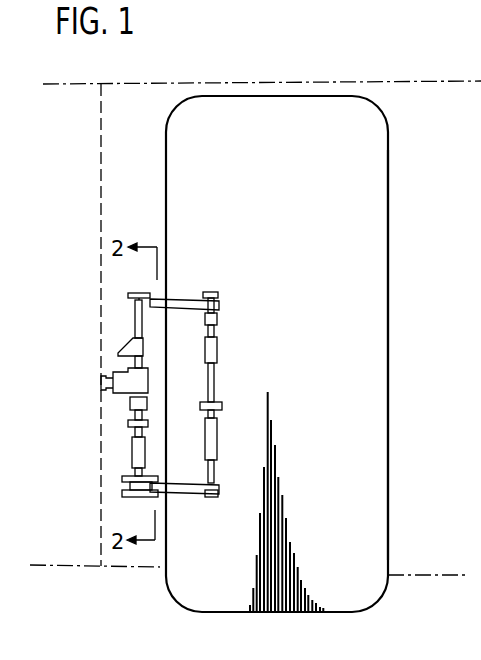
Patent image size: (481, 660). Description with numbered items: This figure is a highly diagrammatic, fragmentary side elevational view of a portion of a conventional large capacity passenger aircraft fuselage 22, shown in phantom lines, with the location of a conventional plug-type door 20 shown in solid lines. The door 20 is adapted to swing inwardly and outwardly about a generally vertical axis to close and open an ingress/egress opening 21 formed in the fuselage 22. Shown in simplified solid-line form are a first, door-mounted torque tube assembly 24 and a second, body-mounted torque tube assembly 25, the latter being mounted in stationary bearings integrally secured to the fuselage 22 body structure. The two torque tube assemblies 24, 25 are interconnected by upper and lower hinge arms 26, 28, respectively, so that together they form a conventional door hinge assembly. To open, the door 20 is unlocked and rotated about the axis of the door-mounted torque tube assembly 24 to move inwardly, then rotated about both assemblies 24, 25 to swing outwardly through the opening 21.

The plug-type door 20 is at (363, 220).
The ingress/egress opening 21 is at (390, 373).
The fuselage 22 is at (367, 80).
The door-mounted torque tube assembly 24 is at (222, 390).
The body-mounted torque tube assembly 25 is at (120, 429).
The upper hinge arm 26 is at (188, 302).
The lower hinge arm 28 is at (176, 494).